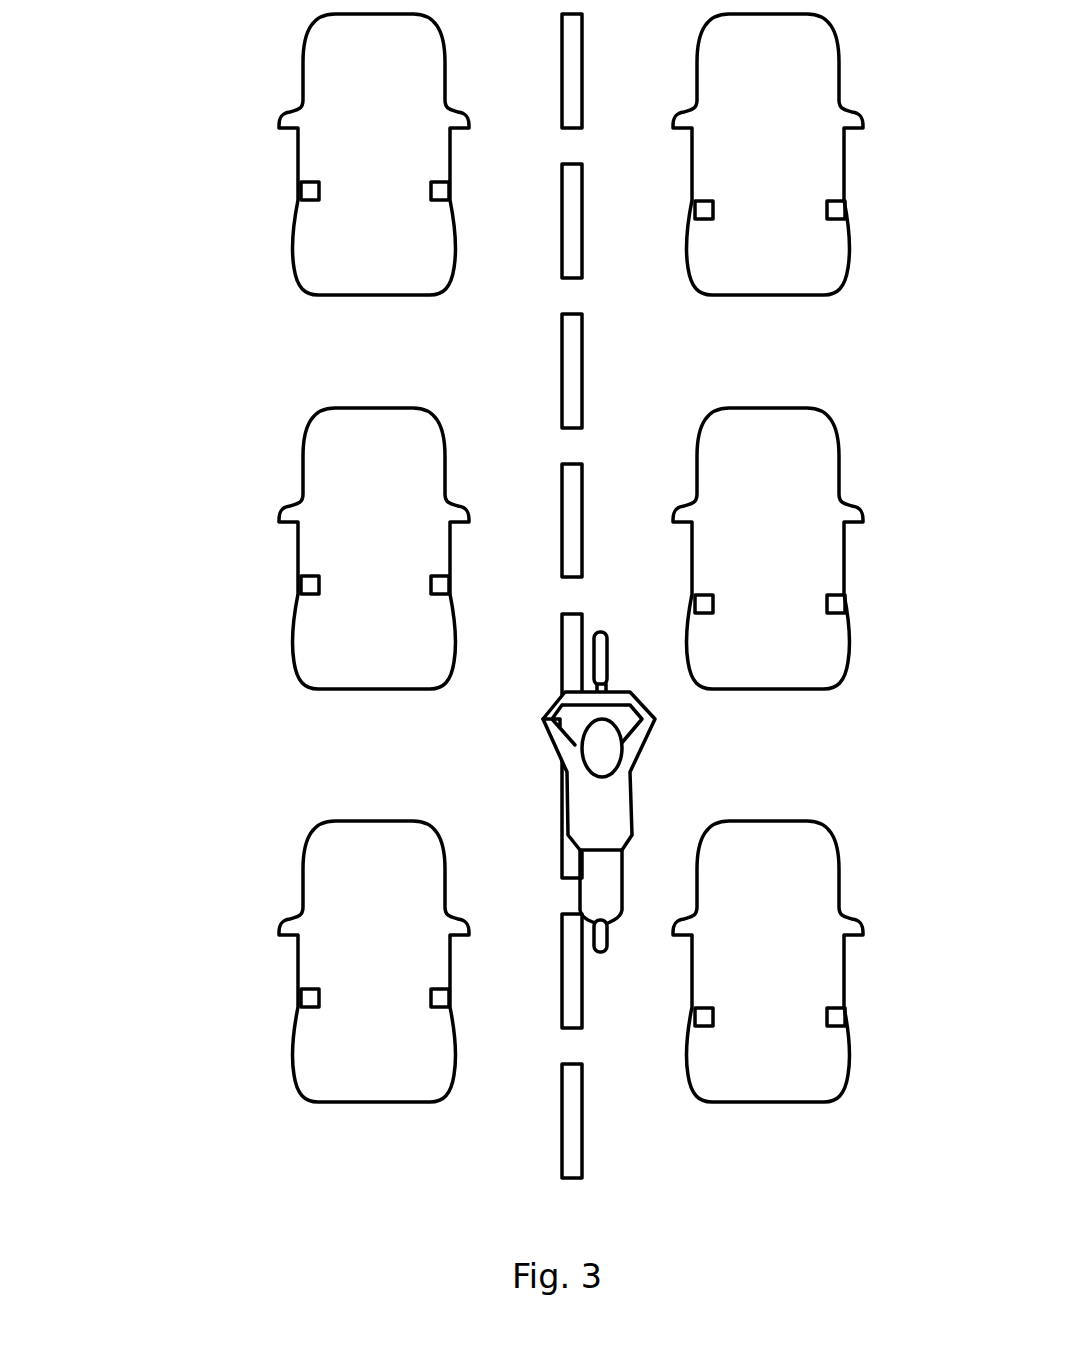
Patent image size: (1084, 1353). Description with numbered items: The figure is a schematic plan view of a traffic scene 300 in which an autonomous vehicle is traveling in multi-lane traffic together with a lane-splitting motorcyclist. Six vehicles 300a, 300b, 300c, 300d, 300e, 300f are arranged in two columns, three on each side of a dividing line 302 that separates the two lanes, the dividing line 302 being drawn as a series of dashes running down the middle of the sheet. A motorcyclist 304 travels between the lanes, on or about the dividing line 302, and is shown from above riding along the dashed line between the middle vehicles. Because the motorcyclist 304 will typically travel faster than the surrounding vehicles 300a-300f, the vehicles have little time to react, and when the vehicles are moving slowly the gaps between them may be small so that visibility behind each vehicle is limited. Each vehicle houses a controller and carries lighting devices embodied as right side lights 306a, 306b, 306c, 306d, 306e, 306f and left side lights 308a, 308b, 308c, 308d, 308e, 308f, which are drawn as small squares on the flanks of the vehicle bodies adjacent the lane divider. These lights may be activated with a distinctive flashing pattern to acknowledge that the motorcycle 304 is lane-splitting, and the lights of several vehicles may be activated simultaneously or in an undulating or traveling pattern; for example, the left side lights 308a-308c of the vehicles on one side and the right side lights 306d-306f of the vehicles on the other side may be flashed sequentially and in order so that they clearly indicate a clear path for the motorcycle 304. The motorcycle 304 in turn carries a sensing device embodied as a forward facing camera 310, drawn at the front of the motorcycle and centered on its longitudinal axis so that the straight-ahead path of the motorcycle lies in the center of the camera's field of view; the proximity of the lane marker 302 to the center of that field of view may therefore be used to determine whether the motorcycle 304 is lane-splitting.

The vehicles in multi-lane traffic 300 is at (497, 590).
The vehicle 300a is at (790, 998).
The vehicle 300b is at (790, 585).
The vehicle 300c is at (790, 191).
The vehicle 300d is at (398, 997).
The vehicle 300e is at (398, 584).
The vehicle 300f is at (398, 190).
The dividing line 302 is at (583, 518).
The motorcyclist 304 is at (607, 804).
The right side light 306a is at (867, 1049).
The right side light 306b is at (867, 636).
The right side light 306c is at (867, 242).
The right side light 306d is at (474, 1028).
The right side light 306e is at (474, 615).
The right side light 306f is at (447, 193).
The left side light 308a is at (736, 1049).
The left side light 308b is at (736, 636).
The left side light 308c is at (736, 242).
The left side light 308d is at (339, 1028).
The left side light 308e is at (339, 615).
The left side light 308f is at (313, 193).
The forward facing camera 310 is at (606, 691).